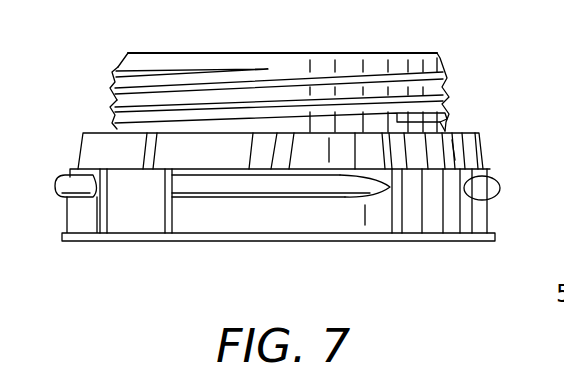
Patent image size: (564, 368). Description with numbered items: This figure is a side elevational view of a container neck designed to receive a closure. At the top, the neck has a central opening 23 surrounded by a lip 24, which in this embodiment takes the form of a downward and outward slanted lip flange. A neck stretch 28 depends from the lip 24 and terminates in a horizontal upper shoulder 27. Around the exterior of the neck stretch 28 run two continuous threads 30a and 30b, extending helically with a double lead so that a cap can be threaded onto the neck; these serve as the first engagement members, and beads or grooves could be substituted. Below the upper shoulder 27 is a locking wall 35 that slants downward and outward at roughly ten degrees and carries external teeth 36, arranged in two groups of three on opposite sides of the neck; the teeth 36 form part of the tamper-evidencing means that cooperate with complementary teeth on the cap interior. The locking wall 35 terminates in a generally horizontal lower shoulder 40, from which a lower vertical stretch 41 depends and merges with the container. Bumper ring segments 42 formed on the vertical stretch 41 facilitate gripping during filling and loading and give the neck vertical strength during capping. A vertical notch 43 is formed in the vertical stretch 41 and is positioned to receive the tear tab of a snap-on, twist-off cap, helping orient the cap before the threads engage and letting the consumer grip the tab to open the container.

The central opening 23 is at (372, 53).
The lip 24 is at (452, 22).
The upper shoulder 27 is at (445, 153).
The neck stretch 28 is at (133, 63).
The thread 30a is at (115, 117).
The thread 30b is at (115, 97).
The locking wall 35 is at (443, 152).
The external tooth 36 is at (407, 163).
The lower shoulder 40 is at (97, 128).
The lower vertical stretch 41 is at (197, 218).
The bumper ring segments 42 is at (263, 185).
The vertical notch 43 is at (135, 222).